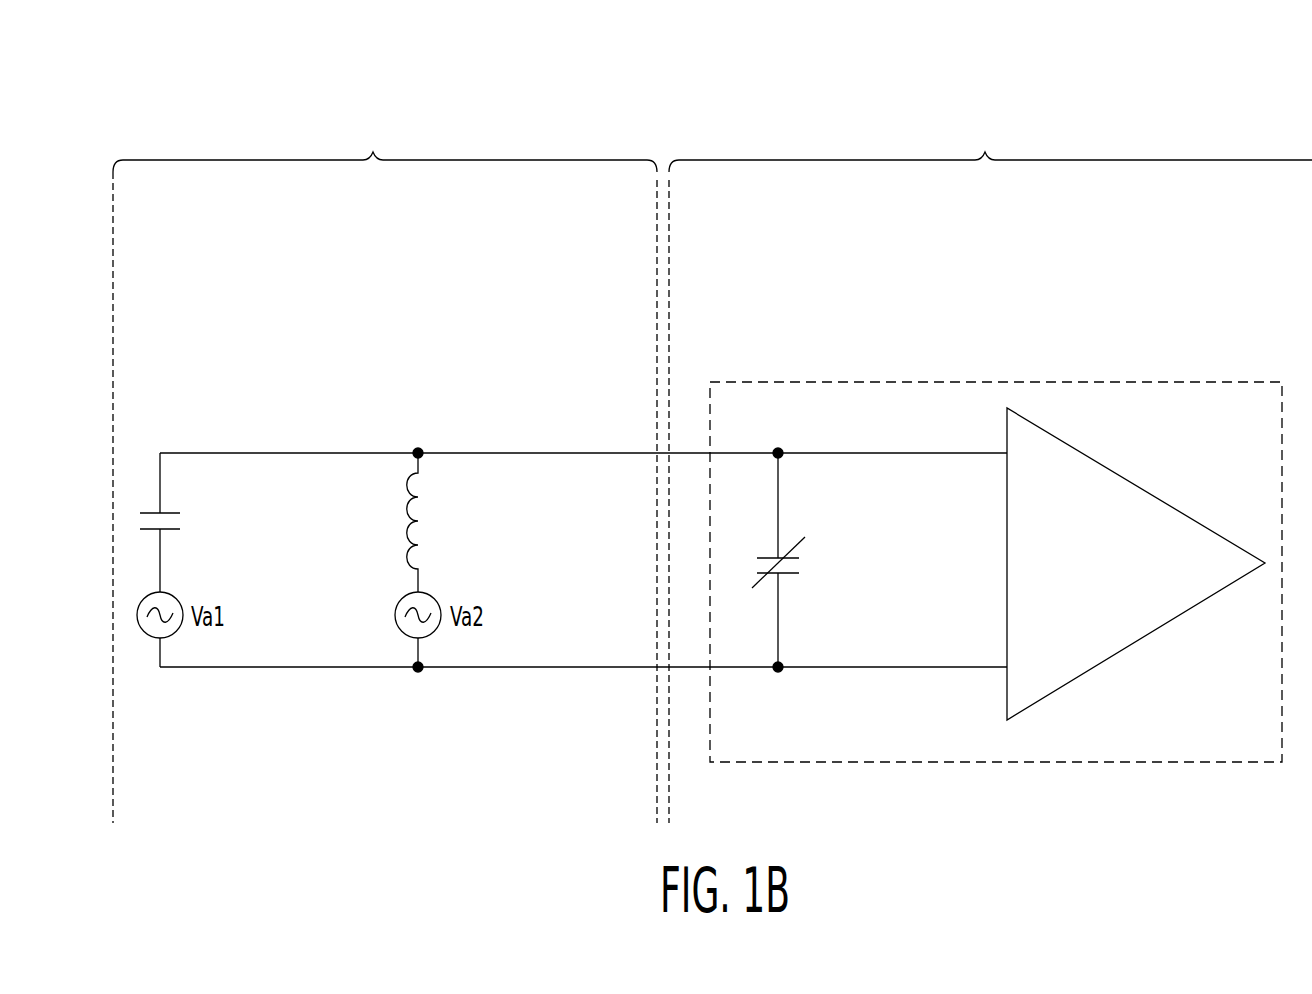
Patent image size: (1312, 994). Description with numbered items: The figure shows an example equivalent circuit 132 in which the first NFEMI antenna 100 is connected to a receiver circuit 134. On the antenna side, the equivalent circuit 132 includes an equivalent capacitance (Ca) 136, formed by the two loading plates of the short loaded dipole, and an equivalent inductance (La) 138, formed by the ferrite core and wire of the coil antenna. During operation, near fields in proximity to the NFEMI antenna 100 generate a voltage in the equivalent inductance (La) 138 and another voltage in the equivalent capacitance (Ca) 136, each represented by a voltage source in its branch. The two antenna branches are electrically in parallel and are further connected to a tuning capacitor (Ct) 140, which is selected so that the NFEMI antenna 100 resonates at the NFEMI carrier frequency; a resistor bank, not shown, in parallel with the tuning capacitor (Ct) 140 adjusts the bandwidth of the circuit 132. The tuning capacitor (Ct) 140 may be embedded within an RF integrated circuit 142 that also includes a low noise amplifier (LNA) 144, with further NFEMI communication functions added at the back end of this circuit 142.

The first NFEMI antenna 100 is at (480, 128).
The equivalent circuit 132 is at (97, 116).
The receiver circuit 134 is at (1088, 132).
The equivalent capacitance (Ca) 136 is at (228, 526).
The equivalent inductance (La) 138 is at (464, 522).
The tuning capacitor (Ct) 140 is at (842, 566).
The RF integrated circuit (RF IC) 142 is at (890, 380).
The low noise amplifier (LNA) 144 is at (1150, 492).